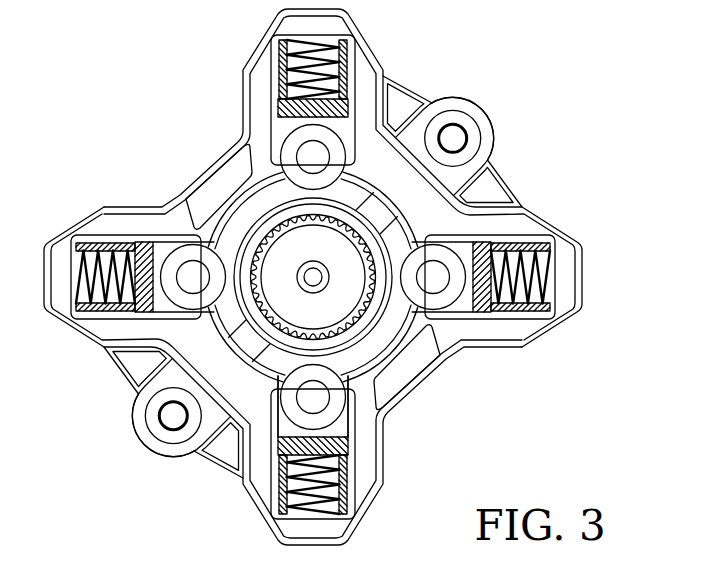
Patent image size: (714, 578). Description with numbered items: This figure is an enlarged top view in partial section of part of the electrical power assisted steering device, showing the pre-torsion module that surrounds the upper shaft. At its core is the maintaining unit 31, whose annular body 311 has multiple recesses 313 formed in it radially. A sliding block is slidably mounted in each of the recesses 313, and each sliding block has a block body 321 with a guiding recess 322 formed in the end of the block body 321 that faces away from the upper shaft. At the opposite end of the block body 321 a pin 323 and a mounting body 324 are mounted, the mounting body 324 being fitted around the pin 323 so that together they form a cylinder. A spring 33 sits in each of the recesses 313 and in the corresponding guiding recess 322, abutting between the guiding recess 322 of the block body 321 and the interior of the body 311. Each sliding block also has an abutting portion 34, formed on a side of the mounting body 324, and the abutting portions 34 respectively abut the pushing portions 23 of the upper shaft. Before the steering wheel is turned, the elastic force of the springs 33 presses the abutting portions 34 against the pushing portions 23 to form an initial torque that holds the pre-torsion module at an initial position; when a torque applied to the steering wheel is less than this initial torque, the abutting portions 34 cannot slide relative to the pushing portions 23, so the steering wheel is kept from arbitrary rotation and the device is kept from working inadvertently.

The maintaining unit 31 is at (414, 67).
The body 311 is at (556, 236).
The recesses 313 is at (348, 420).
The block body 321 is at (483, 306).
The guiding recess 322 is at (517, 250).
The pin 323 is at (436, 290).
The mounting body 324 is at (293, 418).
The springs 33 is at (546, 272).
The abutting portion 34 is at (288, 197).
The pushing portions 23 is at (186, 283).